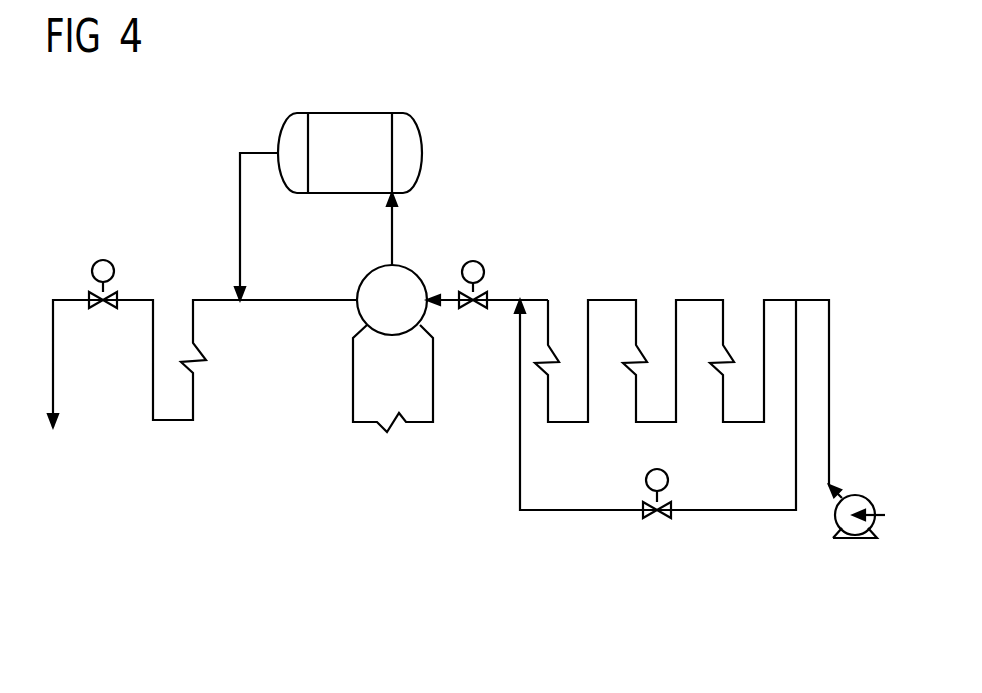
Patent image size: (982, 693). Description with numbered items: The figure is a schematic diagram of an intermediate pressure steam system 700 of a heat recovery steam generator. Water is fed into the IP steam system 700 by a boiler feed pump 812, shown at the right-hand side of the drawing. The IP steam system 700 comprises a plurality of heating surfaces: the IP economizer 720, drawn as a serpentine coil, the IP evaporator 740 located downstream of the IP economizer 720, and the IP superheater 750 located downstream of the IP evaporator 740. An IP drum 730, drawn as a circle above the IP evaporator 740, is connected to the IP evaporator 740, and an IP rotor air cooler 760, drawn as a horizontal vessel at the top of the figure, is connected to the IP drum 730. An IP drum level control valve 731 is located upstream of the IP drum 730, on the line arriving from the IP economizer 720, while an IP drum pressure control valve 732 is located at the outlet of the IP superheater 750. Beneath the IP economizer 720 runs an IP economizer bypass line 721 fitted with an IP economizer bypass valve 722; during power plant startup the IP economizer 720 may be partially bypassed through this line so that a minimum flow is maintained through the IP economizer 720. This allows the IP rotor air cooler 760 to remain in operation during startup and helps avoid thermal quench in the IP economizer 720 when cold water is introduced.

The IP steam system 700 is at (466, 311).
The IP economizer 720 is at (657, 282).
The IP economizer bypass line 721 is at (713, 512).
The IP economizer bypass valve 722 is at (664, 471).
The IP drum 730 is at (419, 275).
The IP drum level control valve 731 is at (476, 262).
The IP drum pressure control valve 732 is at (104, 260).
The IP evaporator 740 is at (400, 440).
The IP superheater 750 is at (175, 440).
The IP rotor air cooler 760 is at (352, 113).
The boiler feed pump 812 is at (856, 495).